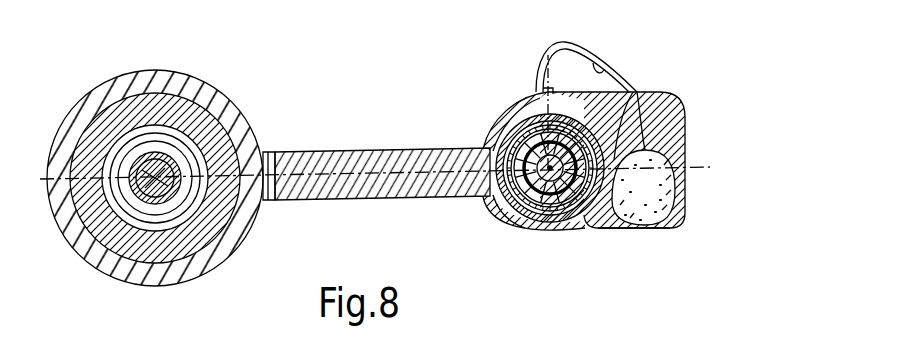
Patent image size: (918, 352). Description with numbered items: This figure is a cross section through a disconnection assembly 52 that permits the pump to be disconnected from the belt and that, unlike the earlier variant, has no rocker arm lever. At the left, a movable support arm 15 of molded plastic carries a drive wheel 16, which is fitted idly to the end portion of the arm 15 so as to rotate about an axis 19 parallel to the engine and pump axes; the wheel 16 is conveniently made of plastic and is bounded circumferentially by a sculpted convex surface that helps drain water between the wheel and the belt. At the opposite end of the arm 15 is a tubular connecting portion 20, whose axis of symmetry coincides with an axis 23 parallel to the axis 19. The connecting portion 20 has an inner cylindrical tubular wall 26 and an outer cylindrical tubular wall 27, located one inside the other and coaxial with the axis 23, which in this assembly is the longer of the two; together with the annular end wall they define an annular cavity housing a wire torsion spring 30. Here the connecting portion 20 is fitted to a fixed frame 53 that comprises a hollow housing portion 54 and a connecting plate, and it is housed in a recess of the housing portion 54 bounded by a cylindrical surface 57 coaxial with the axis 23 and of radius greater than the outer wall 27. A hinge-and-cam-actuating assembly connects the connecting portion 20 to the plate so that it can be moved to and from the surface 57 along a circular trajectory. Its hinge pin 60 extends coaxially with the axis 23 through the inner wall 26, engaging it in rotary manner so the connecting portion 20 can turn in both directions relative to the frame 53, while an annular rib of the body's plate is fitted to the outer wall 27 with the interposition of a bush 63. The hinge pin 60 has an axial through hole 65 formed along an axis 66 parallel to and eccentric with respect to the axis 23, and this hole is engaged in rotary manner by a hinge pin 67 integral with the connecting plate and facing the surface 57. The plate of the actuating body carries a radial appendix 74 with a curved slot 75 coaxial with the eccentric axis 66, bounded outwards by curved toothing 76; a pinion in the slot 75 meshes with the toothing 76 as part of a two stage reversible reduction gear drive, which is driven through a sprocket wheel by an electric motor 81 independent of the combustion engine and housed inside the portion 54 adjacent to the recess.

The movable support arm 15 is at (403, 200).
The drive wheel 16 is at (76, 246).
The axis of rotation of drive wheel 19 is at (113, 122).
The tubular connecting portion 20 is at (562, 234).
The axis of rotation of connecting portion 23 is at (512, 226).
The inner cylindrical tubular wall 26 is at (503, 210).
The outer cylindrical tubular wall 27 is at (530, 226).
The wire torsion spring 30 is at (523, 102).
The assembly 52 is at (688, 102).
The fixed frame 53 is at (674, 152).
The hollow housing portion 54 is at (670, 93).
The cylindrical surface 57 is at (631, 91).
The hinge pin 60 is at (573, 222).
The bush 63 is at (502, 122).
The axial through hole 65 is at (487, 146).
The eccentric axis 66 is at (532, 73).
The hinge pin of connecting plate 67 is at (498, 193).
The radial appendix 74 is at (541, 47).
The curved slot 75 is at (579, 68).
The curved toothing 76 is at (602, 63).
The electric motor 81 is at (658, 228).